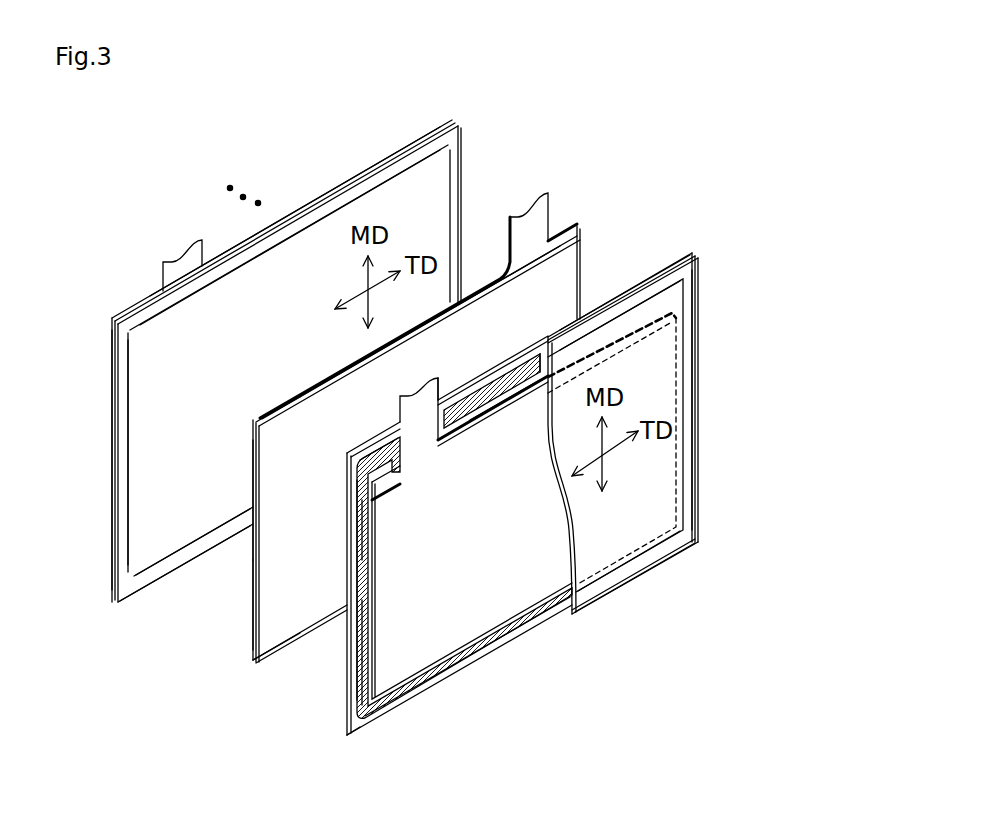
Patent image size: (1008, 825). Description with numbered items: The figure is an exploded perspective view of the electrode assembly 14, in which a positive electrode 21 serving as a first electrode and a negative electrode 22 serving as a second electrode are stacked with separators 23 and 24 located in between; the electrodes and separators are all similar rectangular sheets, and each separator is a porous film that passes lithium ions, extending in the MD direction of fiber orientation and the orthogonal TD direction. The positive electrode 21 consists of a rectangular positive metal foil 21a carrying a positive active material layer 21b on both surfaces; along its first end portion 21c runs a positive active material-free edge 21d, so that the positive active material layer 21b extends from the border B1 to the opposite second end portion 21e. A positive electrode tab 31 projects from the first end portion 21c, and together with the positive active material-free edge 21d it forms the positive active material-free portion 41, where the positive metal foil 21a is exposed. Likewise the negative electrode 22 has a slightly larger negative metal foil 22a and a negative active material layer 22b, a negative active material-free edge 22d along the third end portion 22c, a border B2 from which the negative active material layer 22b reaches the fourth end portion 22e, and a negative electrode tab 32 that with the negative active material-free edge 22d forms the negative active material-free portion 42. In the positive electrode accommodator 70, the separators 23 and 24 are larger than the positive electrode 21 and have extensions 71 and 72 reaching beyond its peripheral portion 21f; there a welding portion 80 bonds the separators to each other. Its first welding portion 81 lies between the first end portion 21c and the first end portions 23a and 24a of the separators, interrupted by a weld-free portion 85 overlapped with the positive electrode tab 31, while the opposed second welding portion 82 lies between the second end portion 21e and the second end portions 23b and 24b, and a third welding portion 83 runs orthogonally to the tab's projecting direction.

The electrode assembly 14 is at (680, 141).
The positive electrode accommodator 70 is at (463, 136).
The extension 71 is at (124, 454).
The extension 72 is at (368, 728).
The separator 23 is at (140, 378).
The first end portion 23a is at (390, 158).
The second end portion 23b is at (118, 606).
The separator 24 is at (112, 348).
The first end portion 24a is at (353, 182).
The second end portion 24b is at (112, 603).
The welding portion 80 is at (303, 216).
The first welding portion 81 is at (465, 412).
The second welding portion 82 is at (437, 678).
The third welding portion 83 is at (357, 497).
The weld-free portion 85 is at (437, 432).
The positive electrode tab 31 is at (192, 258).
The negative electrode tab 32 is at (533, 215).
The positive active material-free portion 41 is at (440, 378).
The negative active material-free portion 42 is at (552, 207).
The negative electrode 22 is at (581, 250).
The negative metal foil 22a is at (253, 623).
The negative active material layer 22b is at (270, 582).
The third end portion 22c is at (327, 378).
The negative active material-free edge 22d is at (277, 408).
The fourth end portion 22e is at (263, 660).
The positive electrode 21 is at (372, 572).
The positive metal foil 21a is at (370, 672).
The positive active material layer 21b is at (388, 648).
The first end portion 21c is at (522, 396).
The positive active material-free edge 21d is at (388, 478).
The second end portion 21e is at (472, 660).
The peripheral portion 21f is at (366, 544).
The border B1 is at (546, 378).
The border B2 is at (490, 284).